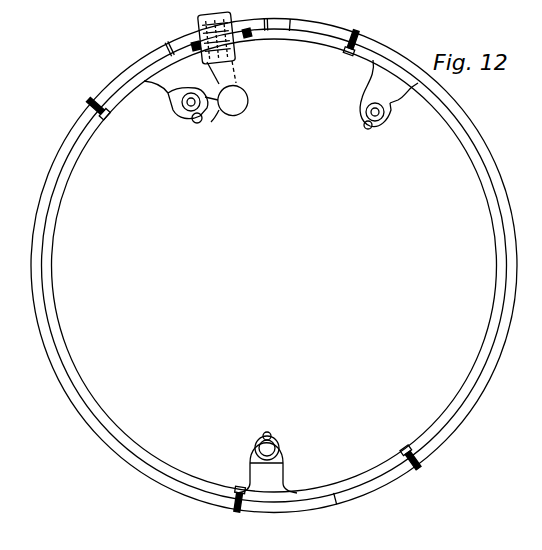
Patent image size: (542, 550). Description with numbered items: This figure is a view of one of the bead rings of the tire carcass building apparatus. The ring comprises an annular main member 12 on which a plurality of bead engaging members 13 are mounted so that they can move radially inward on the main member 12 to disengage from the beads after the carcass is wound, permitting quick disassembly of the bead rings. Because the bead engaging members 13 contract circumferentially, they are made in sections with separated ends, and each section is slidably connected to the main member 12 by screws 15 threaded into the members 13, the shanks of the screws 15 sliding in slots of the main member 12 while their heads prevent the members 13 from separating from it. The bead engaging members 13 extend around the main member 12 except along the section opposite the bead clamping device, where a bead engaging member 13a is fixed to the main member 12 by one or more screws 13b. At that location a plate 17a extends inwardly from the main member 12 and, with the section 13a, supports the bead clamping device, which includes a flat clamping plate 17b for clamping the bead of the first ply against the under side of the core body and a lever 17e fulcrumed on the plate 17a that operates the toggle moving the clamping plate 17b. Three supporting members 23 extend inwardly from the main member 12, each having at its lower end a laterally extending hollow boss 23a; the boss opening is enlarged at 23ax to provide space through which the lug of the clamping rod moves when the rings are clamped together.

The main member 12 is at (468, 146).
The bead engaging members 13 is at (477, 138).
The fixed bead engaging member 13a is at (292, 24).
The screws 13b is at (190, 38).
The screws 15 is at (90, 106).
The plate 17a is at (214, 112).
The clamping plate 17b is at (218, 15).
The lever 17e is at (246, 108).
The supporting member 23 is at (296, 476).
The hollow boss 23a is at (180, 108).
The enlarged opening 23ax is at (386, 146).